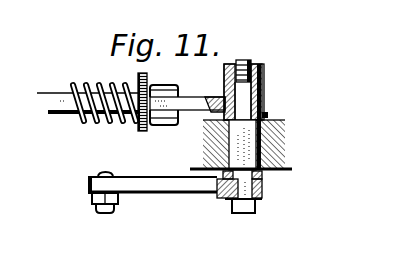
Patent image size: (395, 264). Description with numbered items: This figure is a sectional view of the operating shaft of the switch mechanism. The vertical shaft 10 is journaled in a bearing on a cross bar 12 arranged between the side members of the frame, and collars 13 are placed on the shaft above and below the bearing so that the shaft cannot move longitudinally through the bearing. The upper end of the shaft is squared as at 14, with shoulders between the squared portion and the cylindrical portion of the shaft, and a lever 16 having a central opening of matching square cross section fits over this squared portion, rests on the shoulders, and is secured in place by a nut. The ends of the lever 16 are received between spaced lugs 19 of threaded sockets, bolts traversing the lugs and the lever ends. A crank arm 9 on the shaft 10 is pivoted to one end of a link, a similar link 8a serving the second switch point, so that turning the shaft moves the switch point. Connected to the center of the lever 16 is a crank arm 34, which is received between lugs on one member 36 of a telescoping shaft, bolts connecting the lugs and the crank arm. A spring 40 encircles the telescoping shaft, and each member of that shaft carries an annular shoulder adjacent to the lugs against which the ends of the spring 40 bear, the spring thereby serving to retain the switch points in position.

The link 8a is at (88, 197).
The crank arm 9 is at (190, 183).
The vertical shaft 10 is at (247, 60).
The cross bar 12 is at (283, 155).
The collars 13 is at (268, 114).
The squared portion of shaft 14 is at (245, 97).
The lever 16 is at (224, 88).
The spaced lugs 19 is at (270, 178).
The crank arm 34 is at (200, 110).
The member of telescoping shaft 36 is at (72, 120).
The spring 40 is at (88, 72).